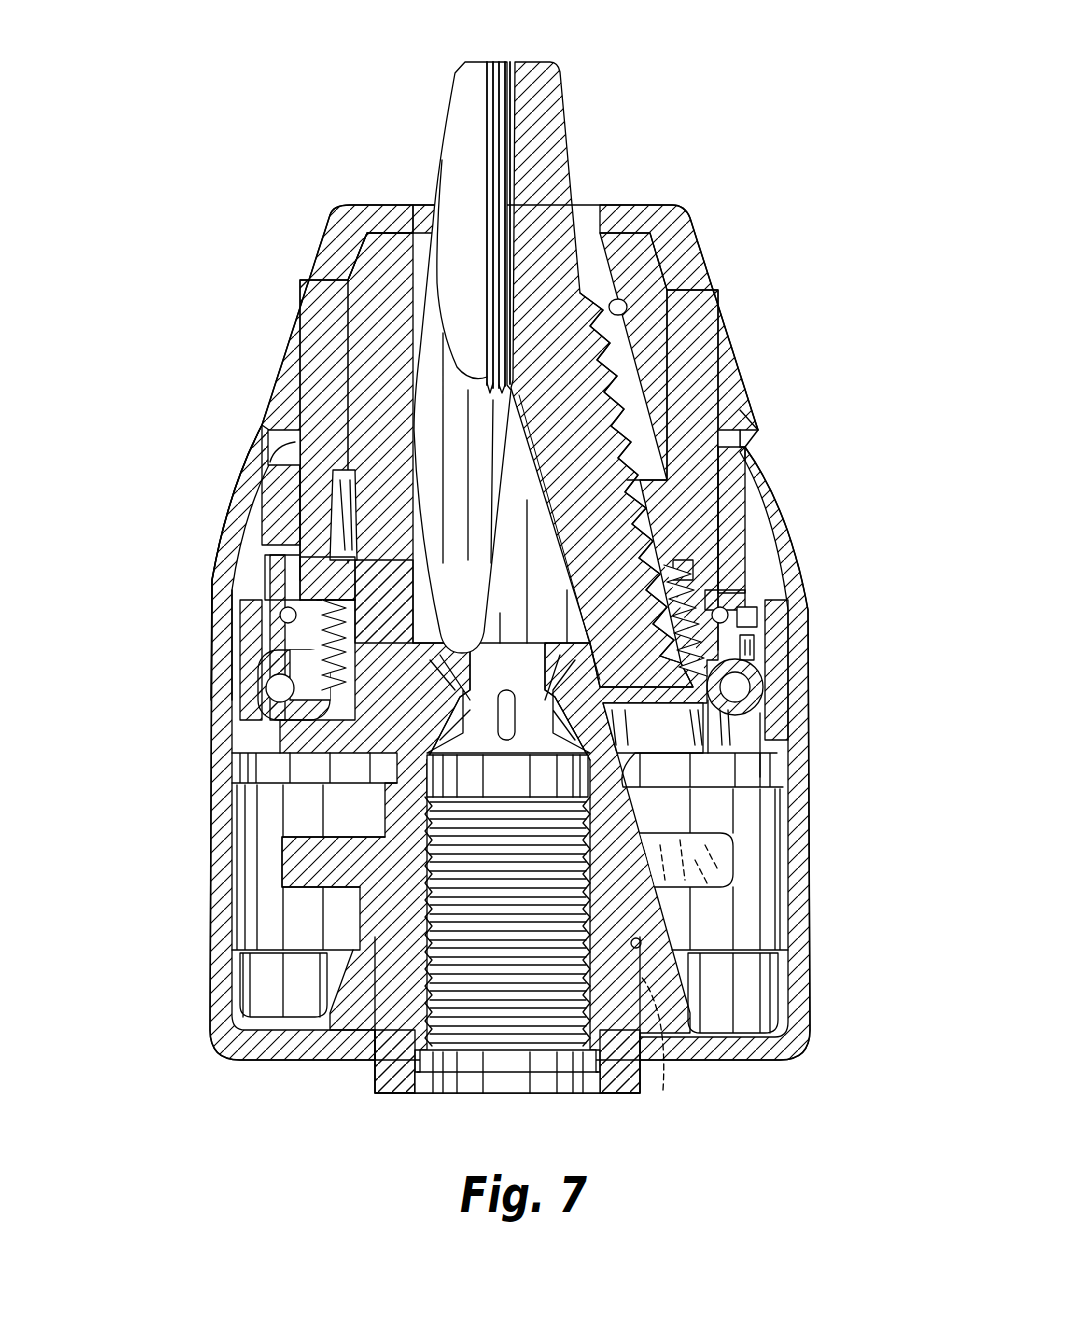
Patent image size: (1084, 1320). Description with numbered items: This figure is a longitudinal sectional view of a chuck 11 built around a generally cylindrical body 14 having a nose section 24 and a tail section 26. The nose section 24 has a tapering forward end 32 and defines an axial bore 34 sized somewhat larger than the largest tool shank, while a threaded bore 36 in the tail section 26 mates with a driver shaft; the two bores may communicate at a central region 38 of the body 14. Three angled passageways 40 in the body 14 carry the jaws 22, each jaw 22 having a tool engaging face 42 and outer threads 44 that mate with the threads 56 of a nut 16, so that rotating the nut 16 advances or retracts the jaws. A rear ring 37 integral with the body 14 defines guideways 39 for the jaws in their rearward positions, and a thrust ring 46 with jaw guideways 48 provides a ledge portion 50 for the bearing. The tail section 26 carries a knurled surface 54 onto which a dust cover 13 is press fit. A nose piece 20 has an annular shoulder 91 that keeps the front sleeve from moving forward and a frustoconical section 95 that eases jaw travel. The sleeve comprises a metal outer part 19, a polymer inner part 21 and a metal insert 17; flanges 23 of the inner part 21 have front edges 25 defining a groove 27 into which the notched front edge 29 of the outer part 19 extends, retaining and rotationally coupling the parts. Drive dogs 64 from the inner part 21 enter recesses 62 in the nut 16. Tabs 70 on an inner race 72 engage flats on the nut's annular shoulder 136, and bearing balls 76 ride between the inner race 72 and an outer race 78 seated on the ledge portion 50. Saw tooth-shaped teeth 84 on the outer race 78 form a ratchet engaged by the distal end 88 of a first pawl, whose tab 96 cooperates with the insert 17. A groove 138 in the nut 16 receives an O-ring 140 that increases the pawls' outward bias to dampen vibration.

The chuck 11 is at (167, 818).
The dust cover 13 is at (212, 1040).
The body 14 is at (360, 917).
The nut 16 is at (315, 552).
The metal insert 17 is at (240, 613).
The metal outer part 19 is at (233, 507).
The nose piece 20 is at (637, 203).
The polymer inner part 21 is at (777, 498).
The jaws 22 is at (572, 133).
The flanges 23 is at (748, 408).
The nose section 24 is at (350, 317).
The front edges 25 is at (745, 445).
The tail section 26 is at (373, 1081).
The groove 27 is at (737, 453).
The front edge 29 is at (281, 450).
The forward end 32 is at (662, 254).
The axial bore 34 is at (428, 252).
The threaded bore 36 is at (560, 1084).
The rear ring 37 is at (280, 872).
The central region 38 is at (507, 724).
The guideways 39 is at (710, 867).
The passageways 40 is at (624, 308).
The tool engaging face 42 is at (516, 60).
The threads 44 is at (608, 333).
The thrust ring 46 is at (280, 746).
The jaw guideways 48 is at (740, 745).
The ledge portion 50 is at (330, 706).
The knurled surface 54 is at (654, 1027).
The threads 56 is at (430, 650).
The recesses 62 is at (729, 553).
The drive dogs 64 is at (720, 523).
The tabs 70 is at (274, 588).
The inner race 72 is at (700, 670).
The bearing balls 76 is at (278, 686).
The outer race 78 is at (718, 726).
The teeth 84 is at (247, 622).
The distal end 88 is at (748, 673).
The annular shoulder 91 is at (277, 457).
The frustoconical section 95 is at (350, 523).
The tab 96 is at (748, 617).
The annular shoulder 136 is at (735, 584).
The groove 138 is at (748, 635).
The O-ring 140 is at (318, 607).